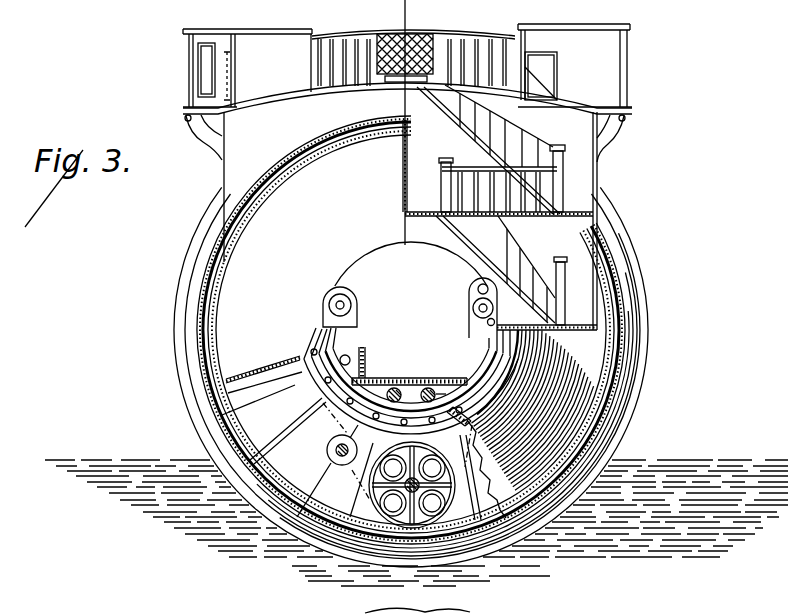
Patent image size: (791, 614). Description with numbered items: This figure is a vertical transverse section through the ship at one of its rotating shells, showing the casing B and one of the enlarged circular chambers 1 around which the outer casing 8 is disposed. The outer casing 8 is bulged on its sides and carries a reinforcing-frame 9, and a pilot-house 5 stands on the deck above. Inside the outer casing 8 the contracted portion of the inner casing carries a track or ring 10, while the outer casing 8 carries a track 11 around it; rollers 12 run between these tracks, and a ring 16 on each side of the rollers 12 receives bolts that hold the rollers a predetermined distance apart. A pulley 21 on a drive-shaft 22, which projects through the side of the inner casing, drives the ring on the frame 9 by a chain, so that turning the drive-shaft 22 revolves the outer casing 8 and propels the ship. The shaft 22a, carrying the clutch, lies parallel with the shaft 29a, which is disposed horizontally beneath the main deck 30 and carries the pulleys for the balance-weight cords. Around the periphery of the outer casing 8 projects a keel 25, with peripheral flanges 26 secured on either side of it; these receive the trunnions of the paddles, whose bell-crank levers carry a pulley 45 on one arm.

The enlarged circular chamber 1 is at (368, 264).
The pilot-house 5 is at (407, 65).
The outer casing 8 is at (290, 168).
The reinforcing-frame 9 is at (267, 448).
The track or ring 10 is at (348, 378).
The track 11 is at (310, 385).
The roller 12 is at (328, 348).
The ring 16 is at (452, 416).
The pulley 21 is at (370, 493).
The drive-shaft 22 is at (458, 480).
The shaft 22a is at (412, 377).
The keel 25 is at (177, 361).
The peripheral flange 26 is at (174, 326).
The shaft 29a is at (442, 388).
The main deck 30 is at (397, 389).
The pulley 45 is at (417, 602).
The casing B is at (244, 216).